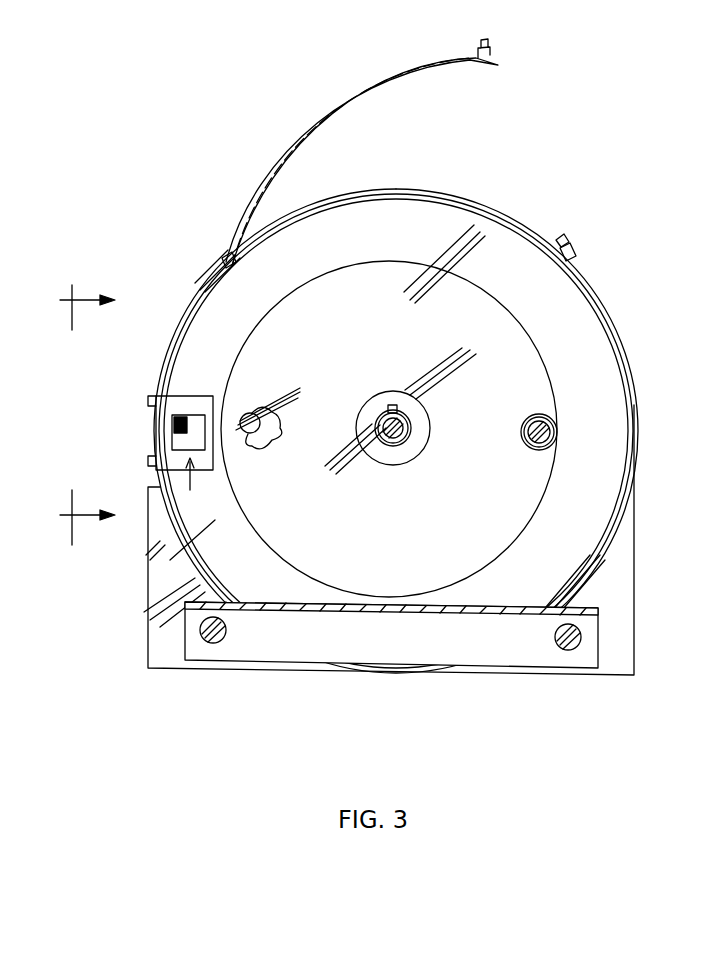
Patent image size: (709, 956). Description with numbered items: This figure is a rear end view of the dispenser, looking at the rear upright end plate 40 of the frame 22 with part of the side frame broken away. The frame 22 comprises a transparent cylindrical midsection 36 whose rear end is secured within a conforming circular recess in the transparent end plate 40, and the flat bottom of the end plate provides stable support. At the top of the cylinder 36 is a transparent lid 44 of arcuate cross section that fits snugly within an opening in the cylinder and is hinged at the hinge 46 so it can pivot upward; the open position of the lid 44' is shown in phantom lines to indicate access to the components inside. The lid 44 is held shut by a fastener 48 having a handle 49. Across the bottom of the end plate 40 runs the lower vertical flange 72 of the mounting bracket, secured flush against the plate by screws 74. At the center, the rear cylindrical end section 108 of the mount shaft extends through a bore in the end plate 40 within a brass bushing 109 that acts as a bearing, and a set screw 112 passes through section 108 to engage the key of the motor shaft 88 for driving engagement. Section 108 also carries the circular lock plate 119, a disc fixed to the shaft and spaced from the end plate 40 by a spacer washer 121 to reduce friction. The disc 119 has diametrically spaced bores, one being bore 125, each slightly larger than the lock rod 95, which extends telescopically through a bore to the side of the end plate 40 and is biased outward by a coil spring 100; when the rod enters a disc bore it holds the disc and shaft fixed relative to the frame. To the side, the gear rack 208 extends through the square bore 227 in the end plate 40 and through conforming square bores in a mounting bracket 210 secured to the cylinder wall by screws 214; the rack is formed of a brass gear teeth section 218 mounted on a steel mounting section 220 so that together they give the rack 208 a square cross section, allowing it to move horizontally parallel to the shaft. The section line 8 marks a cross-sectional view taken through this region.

The section line 8- 8 is at (87, 410).
The frame 22 is at (640, 313).
The cylindrical midsection 36 is at (608, 535).
The rear upright end plate 40 is at (612, 577).
The lid 44 is at (433, 173).
The lid in open position 44' is at (362, 152).
The hinge 46 is at (224, 258).
The fastener 48 is at (580, 252).
The handle 49 is at (568, 238).
The lower vertical flange 72 is at (400, 640).
The screws 74 is at (218, 640).
The motor shaft 88 is at (364, 418).
The lock rod 95 is at (548, 432).
The coil spring 100 is at (538, 416).
The rear cylindrical end section 108 is at (406, 436).
The cylindrical bushing 109 is at (411, 427).
The set screw 112 is at (394, 406).
The lock plate 119 is at (348, 285).
The spacer washer 121 is at (400, 455).
The cylindrical bore 125 is at (270, 433).
The gear rack 208 is at (208, 489).
The mounting brackets 210 is at (170, 405).
The screws 214 is at (150, 400).
The gear teeth section 218 is at (188, 420).
The mounting section 220 is at (185, 440).
The square-shaped bore 227 is at (238, 420).